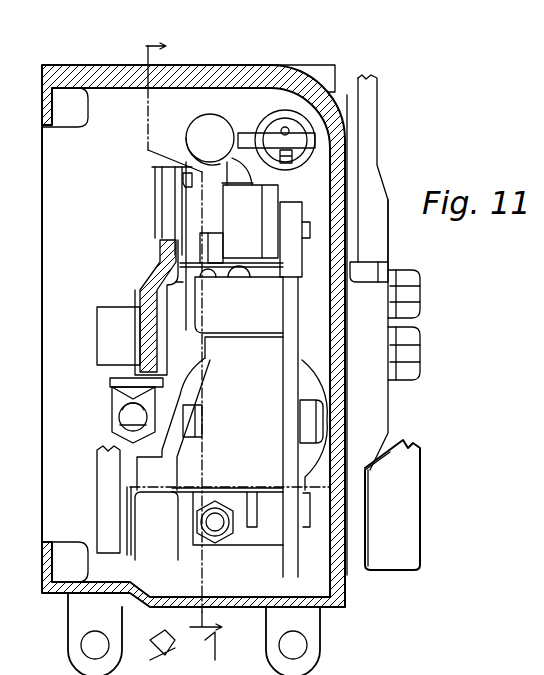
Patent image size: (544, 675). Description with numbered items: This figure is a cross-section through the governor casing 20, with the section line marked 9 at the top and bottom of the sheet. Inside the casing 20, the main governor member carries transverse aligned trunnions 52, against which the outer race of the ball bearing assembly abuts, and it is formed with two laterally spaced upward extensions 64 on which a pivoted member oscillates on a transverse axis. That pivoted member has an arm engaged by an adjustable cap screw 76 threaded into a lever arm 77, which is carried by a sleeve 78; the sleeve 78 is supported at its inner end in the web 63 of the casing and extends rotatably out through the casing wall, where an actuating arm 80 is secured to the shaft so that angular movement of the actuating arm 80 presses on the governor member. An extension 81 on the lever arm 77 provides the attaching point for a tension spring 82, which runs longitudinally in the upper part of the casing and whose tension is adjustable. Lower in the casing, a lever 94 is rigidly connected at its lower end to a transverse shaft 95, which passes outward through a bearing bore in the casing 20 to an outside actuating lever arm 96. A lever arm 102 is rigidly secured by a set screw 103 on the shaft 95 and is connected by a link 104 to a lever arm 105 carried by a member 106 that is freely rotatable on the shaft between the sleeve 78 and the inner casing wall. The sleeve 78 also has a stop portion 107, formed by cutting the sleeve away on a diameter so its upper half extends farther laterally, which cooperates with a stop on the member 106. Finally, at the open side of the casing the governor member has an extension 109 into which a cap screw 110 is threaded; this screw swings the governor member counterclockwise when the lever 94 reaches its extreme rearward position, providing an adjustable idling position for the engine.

The section line 9- 9 is at (227, 339).
The casing 20 is at (338, 78).
The trunnions 52 is at (308, 420).
The web of the casing 63 is at (147, 297).
The upward extensions 64 is at (183, 323).
The adjustable cap screw 76 is at (219, 222).
The lever arm 77 is at (160, 162).
The sleeve 78 is at (185, 187).
The actuating arm 80 is at (370, 125).
The extension 81 is at (268, 137).
The tension spring 82 is at (282, 110).
The lever 94 is at (108, 495).
The transverse shaft 95 is at (393, 518).
The outside actuating lever arm 96 is at (408, 504).
The lever arm 102 is at (272, 532).
The set screw 103 is at (210, 520).
The link 104 is at (293, 315).
The lever arm 105 is at (272, 203).
The member 106 is at (246, 266).
The stop portion 107 is at (219, 235).
The extension 109 is at (117, 383).
The cap screw 110 is at (130, 423).